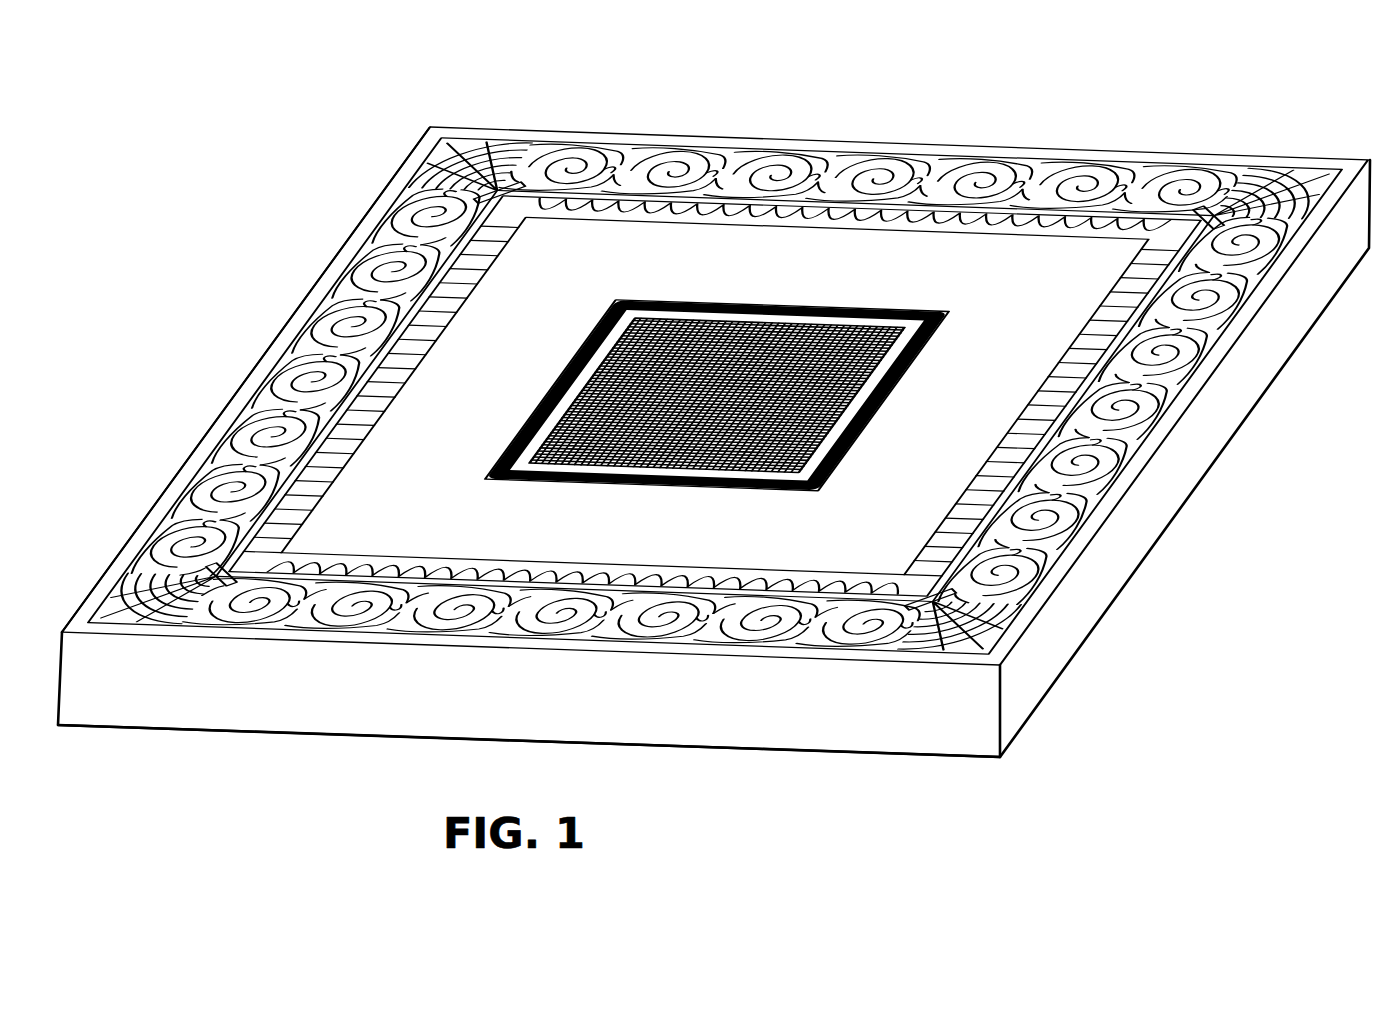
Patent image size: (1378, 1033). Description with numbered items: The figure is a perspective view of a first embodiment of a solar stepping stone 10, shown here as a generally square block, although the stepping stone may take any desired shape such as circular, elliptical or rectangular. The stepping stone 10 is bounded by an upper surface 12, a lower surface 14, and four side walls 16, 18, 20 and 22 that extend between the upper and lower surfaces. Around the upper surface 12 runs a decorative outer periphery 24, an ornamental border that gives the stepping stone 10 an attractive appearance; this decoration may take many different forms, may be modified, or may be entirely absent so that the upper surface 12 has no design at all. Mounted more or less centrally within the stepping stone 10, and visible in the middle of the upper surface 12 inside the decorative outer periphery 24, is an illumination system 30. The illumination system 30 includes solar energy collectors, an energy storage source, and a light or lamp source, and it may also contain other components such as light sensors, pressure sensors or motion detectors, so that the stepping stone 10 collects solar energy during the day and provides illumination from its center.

The solar stepping stone 10 is at (305, 116).
The upper surface 12 is at (575, 228).
The lower surface 14 is at (848, 752).
The side wall 16 is at (192, 700).
The side wall 18 is at (1140, 528).
The side wall 20 is at (1026, 150).
The side wall 22 is at (222, 411).
The decorative outer periphery 24 is at (346, 300).
The illumination system 30 is at (694, 296).